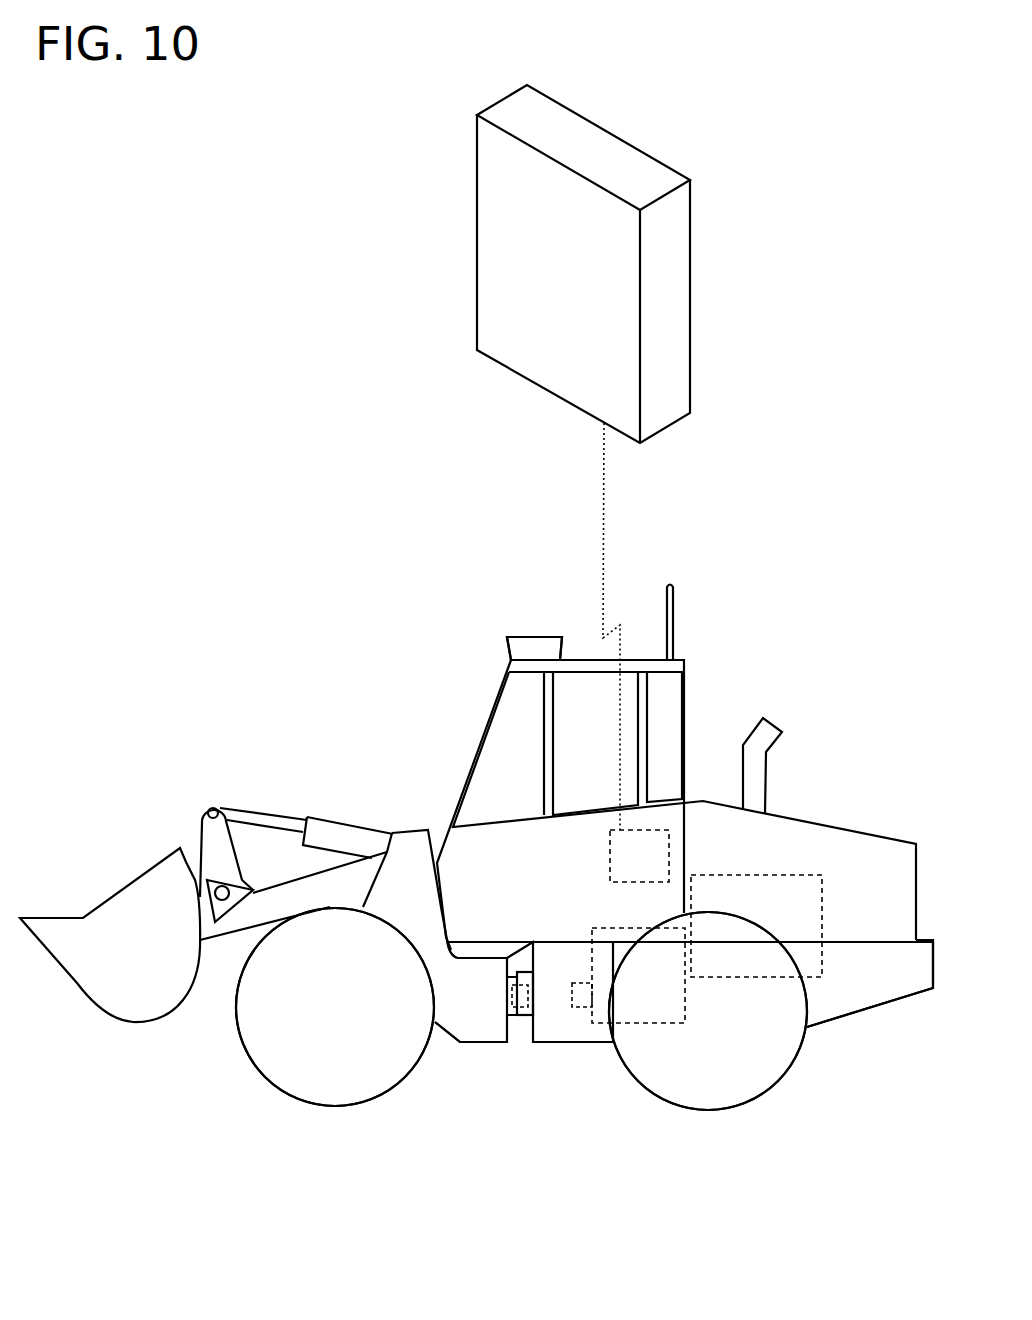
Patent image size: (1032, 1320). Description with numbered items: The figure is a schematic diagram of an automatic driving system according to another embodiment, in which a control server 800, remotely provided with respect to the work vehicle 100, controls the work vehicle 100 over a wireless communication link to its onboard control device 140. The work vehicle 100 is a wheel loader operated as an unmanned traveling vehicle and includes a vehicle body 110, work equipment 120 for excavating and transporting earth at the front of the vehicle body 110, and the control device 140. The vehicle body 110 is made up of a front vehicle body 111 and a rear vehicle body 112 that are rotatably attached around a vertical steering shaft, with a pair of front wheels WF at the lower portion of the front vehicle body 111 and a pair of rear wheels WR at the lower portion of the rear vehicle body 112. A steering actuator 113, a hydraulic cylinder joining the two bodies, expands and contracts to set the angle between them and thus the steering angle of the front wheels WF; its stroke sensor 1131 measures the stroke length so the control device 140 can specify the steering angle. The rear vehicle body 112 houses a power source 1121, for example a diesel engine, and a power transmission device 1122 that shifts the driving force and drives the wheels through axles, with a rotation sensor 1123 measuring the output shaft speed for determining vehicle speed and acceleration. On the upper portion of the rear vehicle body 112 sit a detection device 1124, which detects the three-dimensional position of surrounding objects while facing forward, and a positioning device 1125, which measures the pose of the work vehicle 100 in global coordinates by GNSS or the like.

The control server 800 is at (690, 232).
The work vehicle 100 is at (403, 582).
The vehicle body 110 is at (494, 1132).
The front vehicle body 111 is at (452, 1037).
The rear vehicle body 112 is at (857, 1017).
The steering actuator 113 is at (517, 1017).
The stroke sensor 1131 is at (522, 1012).
The work equipment 120 is at (124, 802).
The control device 140 is at (648, 830).
The power source 1121 is at (797, 875).
The power transmission device 1122 is at (683, 997).
The rotation sensor 1123 is at (577, 1007).
The detection device 1124 is at (533, 637).
The positioning device 1125 is at (673, 590).
The front wheels WF is at (312, 1105).
The rear wheels WR is at (680, 1107).